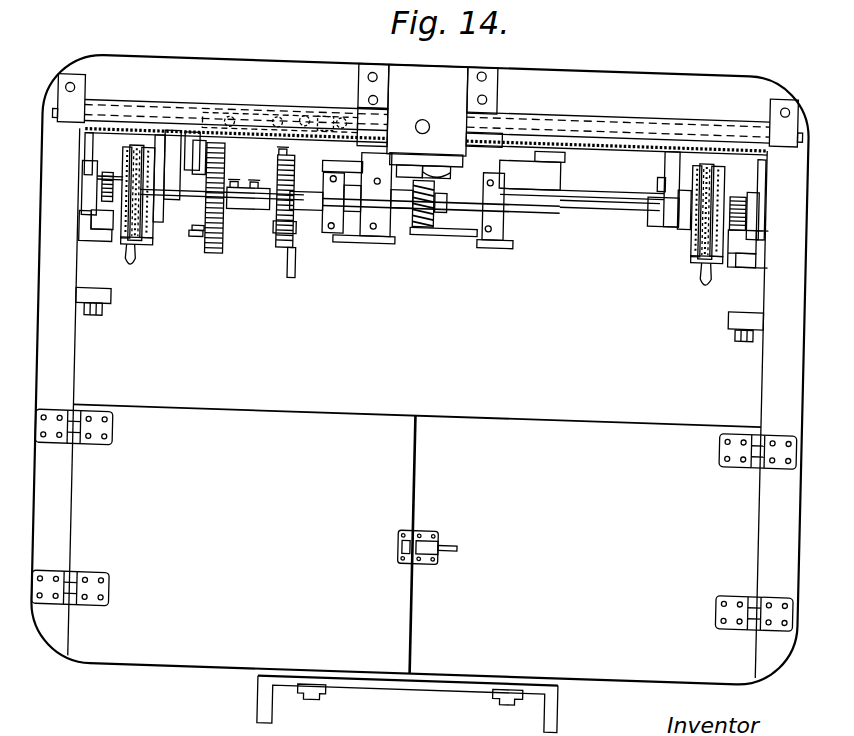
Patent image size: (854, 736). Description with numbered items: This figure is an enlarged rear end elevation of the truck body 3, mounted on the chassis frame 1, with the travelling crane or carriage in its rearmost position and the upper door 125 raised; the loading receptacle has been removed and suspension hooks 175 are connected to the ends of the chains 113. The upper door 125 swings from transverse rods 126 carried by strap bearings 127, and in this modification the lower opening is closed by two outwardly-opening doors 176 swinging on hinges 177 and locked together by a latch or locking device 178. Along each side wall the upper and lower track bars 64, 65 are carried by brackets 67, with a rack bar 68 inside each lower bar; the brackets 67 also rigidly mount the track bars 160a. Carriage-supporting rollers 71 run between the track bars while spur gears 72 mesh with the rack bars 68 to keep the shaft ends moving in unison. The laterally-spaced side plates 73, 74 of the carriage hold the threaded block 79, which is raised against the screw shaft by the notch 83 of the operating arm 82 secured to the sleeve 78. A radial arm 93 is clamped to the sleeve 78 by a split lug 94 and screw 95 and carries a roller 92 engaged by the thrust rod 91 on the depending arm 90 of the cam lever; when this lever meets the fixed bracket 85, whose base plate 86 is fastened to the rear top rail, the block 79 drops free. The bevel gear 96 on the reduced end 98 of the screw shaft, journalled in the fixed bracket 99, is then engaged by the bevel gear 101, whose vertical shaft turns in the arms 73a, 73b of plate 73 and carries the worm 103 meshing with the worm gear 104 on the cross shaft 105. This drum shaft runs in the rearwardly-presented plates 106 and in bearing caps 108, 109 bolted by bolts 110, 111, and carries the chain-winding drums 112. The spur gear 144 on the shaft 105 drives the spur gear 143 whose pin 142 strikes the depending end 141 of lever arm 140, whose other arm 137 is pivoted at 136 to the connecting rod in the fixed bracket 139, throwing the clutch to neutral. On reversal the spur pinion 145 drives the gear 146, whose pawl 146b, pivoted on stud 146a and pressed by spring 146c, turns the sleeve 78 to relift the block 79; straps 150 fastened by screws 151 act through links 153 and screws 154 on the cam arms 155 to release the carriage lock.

The chassis frame 1 is at (265, 695).
The truck body 3 is at (651, 68).
The upper track bar 64 is at (85, 151).
The lower track bar 65 is at (85, 249).
The supporting bracket 67 is at (95, 258).
The rack bar 68 is at (106, 251).
The carriage-supporting roller 71 is at (86, 201).
The spur gear 72 is at (104, 184).
The side plate 73 is at (383, 238).
The inwardly-presented arm 73a is at (526, 180).
The inwardly-presented arm 73b is at (447, 212).
The side plate 74 is at (500, 243).
The sleeve 78 is at (473, 240).
The threaded block 79 is at (465, 132).
The operating arm 82 is at (420, 160).
The notch 83 is at (407, 161).
The fixed bracket 85 is at (382, 118).
The base plate 86 is at (297, 119).
The depending arm 90 is at (352, 214).
The thrust rod 91 is at (335, 168).
The roller 92 is at (313, 214).
The radial arm 93 is at (278, 161).
The split lug 94 is at (354, 236).
The screw 95 is at (326, 232).
The bevel gear 96 is at (422, 157).
The reduced end of screw shaft 98 is at (421, 121).
The fixed bracket 99 is at (446, 79).
The bevel gear 101 is at (496, 170).
The worm 103 is at (394, 209).
The worm gear 104 is at (419, 228).
The cross shaft 105 is at (608, 204).
The rearwardly-presented plate 106 is at (154, 224).
The bearing cap 108 is at (488, 230).
The bearing cap 109 is at (372, 231).
The bolt 110 is at (487, 184).
The bolt 111 is at (364, 245).
The chain-winding drum 112 is at (145, 159).
The chain 113 is at (140, 253).
The upper door 125 is at (124, 135).
The transverse rod 126 is at (119, 114).
The strap bearing 127 is at (63, 86).
The pivotal connection 136 is at (336, 130).
The lever arm 137 is at (319, 118).
The fixed bracket 139 is at (264, 115).
The lever arm 140 is at (201, 127).
The depending end 141 is at (229, 187).
The pin 142 is at (190, 244).
The spur gear 143 is at (200, 238).
The spur gear 144 is at (219, 214).
The spur pinion 145 is at (271, 216).
The gear 146 is at (283, 238).
The stud 146a is at (291, 284).
The pawl 146b is at (250, 209).
The spring 146c is at (273, 177).
The strap 150 is at (190, 140).
The screw 151 is at (540, 154).
The link 153 is at (660, 154).
The screw 154 is at (653, 175).
The cam arm 155 is at (193, 203).
The track bar 160a is at (101, 308).
The suspension hook 175 is at (134, 265).
The outwardly-opening door 176 is at (418, 406).
The hinge 177 is at (112, 440).
The latch 178 is at (436, 543).